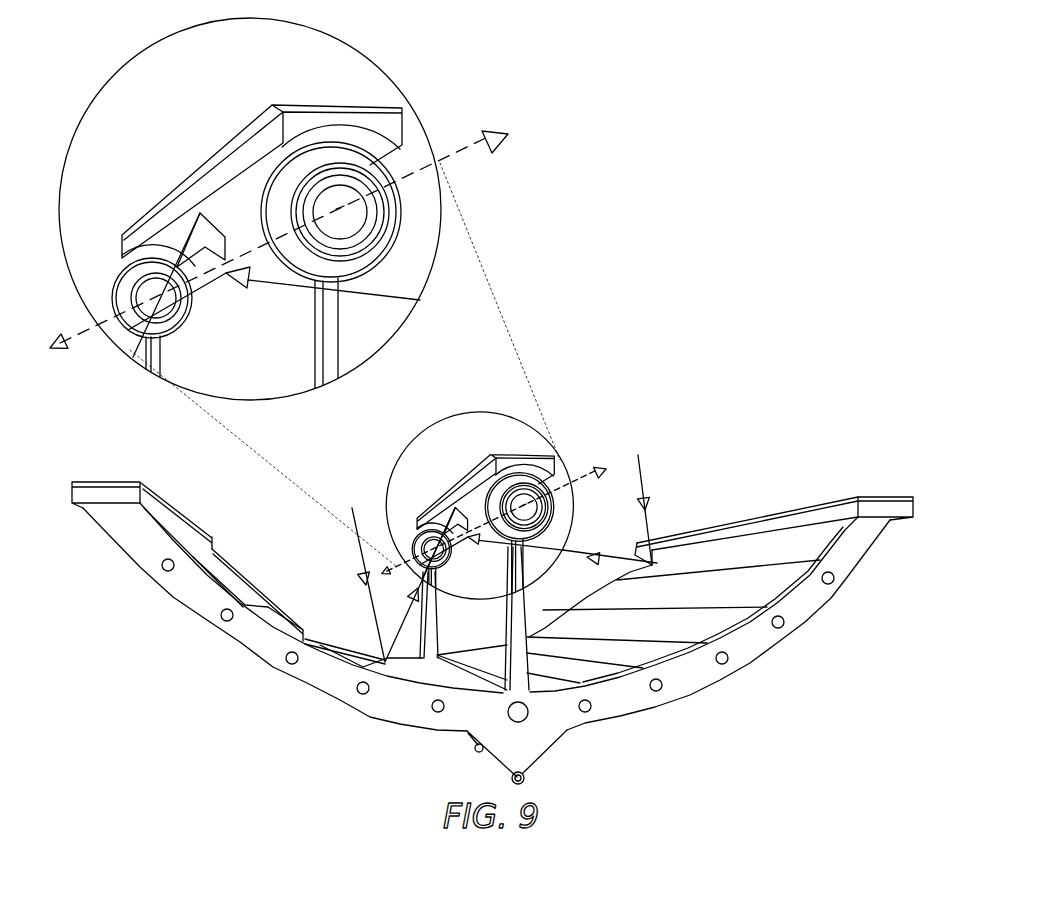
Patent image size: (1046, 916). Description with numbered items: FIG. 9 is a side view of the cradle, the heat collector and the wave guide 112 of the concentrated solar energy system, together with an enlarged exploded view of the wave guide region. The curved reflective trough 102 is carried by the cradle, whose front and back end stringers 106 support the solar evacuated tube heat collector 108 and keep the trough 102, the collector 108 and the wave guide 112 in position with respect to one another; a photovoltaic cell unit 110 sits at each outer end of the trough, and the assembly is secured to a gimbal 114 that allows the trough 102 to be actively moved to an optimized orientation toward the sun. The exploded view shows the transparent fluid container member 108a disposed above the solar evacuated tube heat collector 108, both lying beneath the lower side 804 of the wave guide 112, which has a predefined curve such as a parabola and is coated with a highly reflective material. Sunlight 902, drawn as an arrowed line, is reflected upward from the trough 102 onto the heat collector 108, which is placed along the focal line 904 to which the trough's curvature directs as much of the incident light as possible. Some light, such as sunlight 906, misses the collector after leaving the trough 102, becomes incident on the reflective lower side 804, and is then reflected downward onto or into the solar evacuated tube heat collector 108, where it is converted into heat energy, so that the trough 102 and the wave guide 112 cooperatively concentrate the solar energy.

The reflective trough 102 is at (662, 653).
The stringer 106 is at (193, 590).
The solar evacuated tube heat collector 108 is at (375, 283).
The transparent fluid container member 108a is at (213, 282).
The photovoltaic cell unit 110 is at (112, 482).
The wave guide 112 is at (202, 168).
The gimbal 114 is at (523, 752).
The lower side of the wave guide 804 is at (353, 137).
The incident solar energy 902 is at (660, 486).
The focal line 904 is at (468, 153).
The sunlight 906 is at (352, 552).